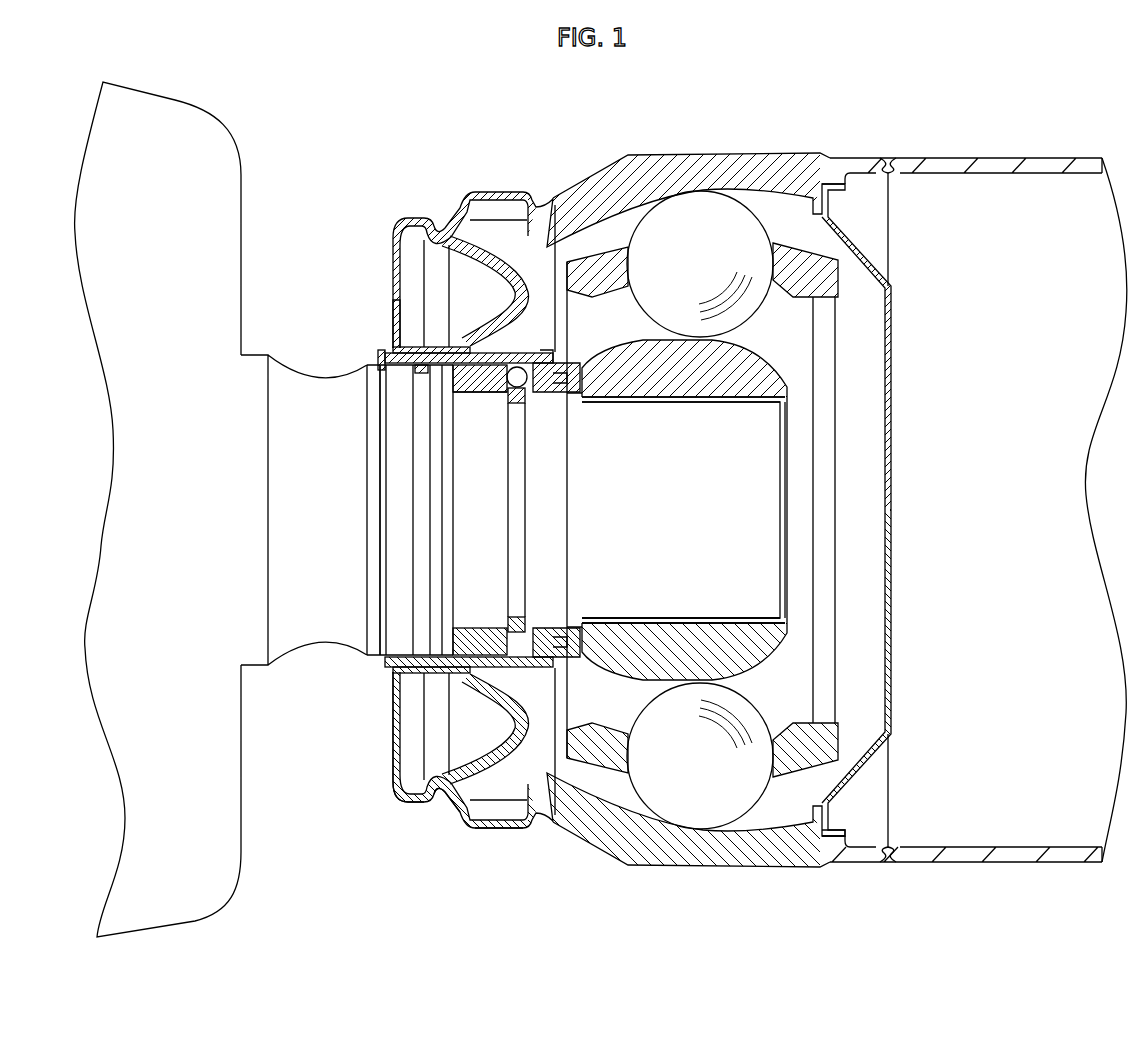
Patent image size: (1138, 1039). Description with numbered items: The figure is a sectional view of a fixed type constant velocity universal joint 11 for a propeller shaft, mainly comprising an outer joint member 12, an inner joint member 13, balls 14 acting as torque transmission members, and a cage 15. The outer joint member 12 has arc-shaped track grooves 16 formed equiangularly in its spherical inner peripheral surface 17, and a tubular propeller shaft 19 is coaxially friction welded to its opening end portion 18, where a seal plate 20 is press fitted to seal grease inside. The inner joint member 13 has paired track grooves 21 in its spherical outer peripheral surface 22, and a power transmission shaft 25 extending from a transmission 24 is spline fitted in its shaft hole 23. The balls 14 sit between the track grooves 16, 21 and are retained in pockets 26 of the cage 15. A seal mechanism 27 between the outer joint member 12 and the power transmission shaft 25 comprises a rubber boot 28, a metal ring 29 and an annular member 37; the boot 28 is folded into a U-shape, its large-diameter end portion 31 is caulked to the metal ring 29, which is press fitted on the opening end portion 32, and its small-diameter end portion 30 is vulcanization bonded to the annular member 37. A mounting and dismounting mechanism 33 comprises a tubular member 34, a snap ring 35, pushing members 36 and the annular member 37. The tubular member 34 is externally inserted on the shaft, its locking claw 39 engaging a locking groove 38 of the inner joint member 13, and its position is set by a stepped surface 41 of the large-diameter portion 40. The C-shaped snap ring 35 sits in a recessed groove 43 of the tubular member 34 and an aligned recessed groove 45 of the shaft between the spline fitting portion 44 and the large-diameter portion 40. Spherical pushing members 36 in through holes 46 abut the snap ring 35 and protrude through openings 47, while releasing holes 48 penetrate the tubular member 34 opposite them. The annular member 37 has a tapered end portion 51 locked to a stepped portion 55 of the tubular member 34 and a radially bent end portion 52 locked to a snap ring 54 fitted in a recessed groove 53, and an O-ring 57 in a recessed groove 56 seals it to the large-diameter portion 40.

The constant velocity universal joint 11 is at (698, 496).
The outer joint member 12 is at (725, 880).
The inner joint member 13 is at (790, 665).
The balls 14 is at (750, 200).
The cage 15 is at (857, 742).
The track grooves 16 is at (785, 838).
The spherical inner peripheral surface 17 is at (576, 762).
The opening end portion 18 is at (862, 862).
The propeller shaft 19 is at (1006, 149).
The seal plate 20 is at (892, 500).
The track grooves 21 is at (792, 352).
The spherical outer peripheral surface 22 is at (846, 256).
The shaft hole 23 is at (700, 622).
The transmission 24 is at (183, 96).
The power transmission shaft 25 is at (313, 664).
The pockets 26 is at (630, 245).
The seal mechanism 27 is at (411, 824).
The boot 28 is at (470, 748).
The metal ring 29 is at (491, 830).
The small-diameter end portion 30 is at (405, 672).
The large-diameter end portion 31 is at (442, 800).
The opening end portion 32 is at (497, 212).
The mounting and dismounting mechanism 33 is at (462, 605).
The tubular member 34 is at (476, 396).
The snap ring 35 is at (526, 626).
The pushing members 36 is at (496, 394).
The annular member 37 is at (410, 349).
The locking groove 38 is at (598, 630).
The locking claw 39 is at (598, 388).
The large-diameter portion 40 is at (437, 500).
The stepped surface 41 is at (470, 345).
The recessed groove 43 is at (542, 668).
The spline fitting portion 44 is at (766, 437).
The recessed groove 45 is at (520, 487).
The through holes 46 is at (521, 402).
The openings 47 is at (518, 370).
The releasing holes 48 is at (490, 700).
The end portion 51 is at (541, 352).
The end portion 52 is at (395, 349).
The recessed groove 53 is at (382, 545).
The snap ring 54 is at (377, 357).
The stepped portion 55 is at (560, 342).
The recessed groove 56 is at (414, 455).
The O-ring 57 is at (421, 374).